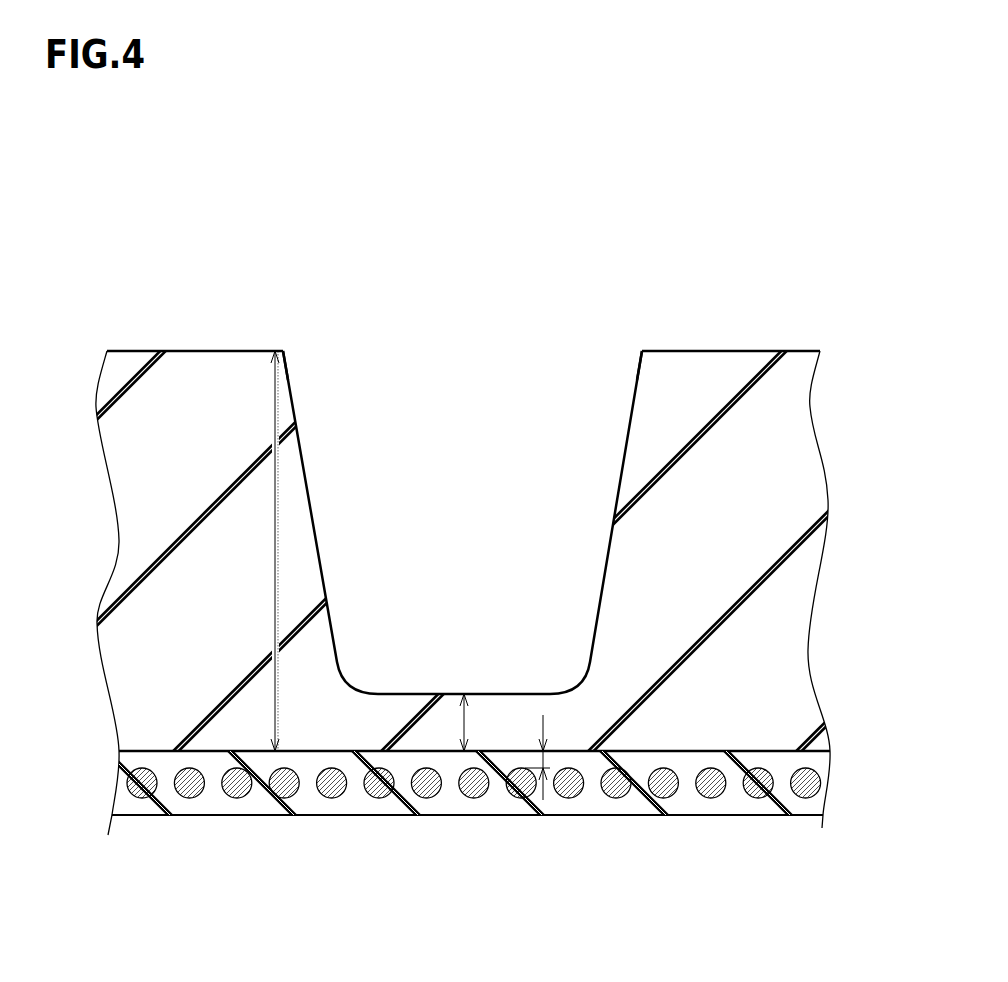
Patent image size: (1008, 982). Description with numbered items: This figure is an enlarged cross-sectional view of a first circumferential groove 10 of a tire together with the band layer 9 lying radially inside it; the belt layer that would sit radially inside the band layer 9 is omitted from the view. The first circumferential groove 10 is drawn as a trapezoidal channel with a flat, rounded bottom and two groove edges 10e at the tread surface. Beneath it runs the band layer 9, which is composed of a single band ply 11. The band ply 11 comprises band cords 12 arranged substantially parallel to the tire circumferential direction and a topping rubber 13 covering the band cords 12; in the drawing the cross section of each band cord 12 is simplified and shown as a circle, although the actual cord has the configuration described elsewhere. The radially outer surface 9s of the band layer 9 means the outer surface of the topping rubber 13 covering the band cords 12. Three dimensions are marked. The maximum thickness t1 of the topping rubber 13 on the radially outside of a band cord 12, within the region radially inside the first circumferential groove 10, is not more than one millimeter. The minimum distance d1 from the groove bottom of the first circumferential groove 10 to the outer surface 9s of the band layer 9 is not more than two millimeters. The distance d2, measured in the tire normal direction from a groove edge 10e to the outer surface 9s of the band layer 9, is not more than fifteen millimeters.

The band layer 9 is at (461, 799).
The radially outer surface of the band layer 9s is at (148, 750).
The first circumferential groove 10 is at (455, 382).
The groove edge 10e is at (287, 348).
The band ply 11 is at (458, 848).
The band cord 12 is at (467, 795).
The topping rubber 13 is at (354, 802).
The minimum distance d1 is at (464, 725).
The distance in the tire normal direction d2 is at (277, 515).
The maximum thickness of the topping rubber t1 is at (545, 757).